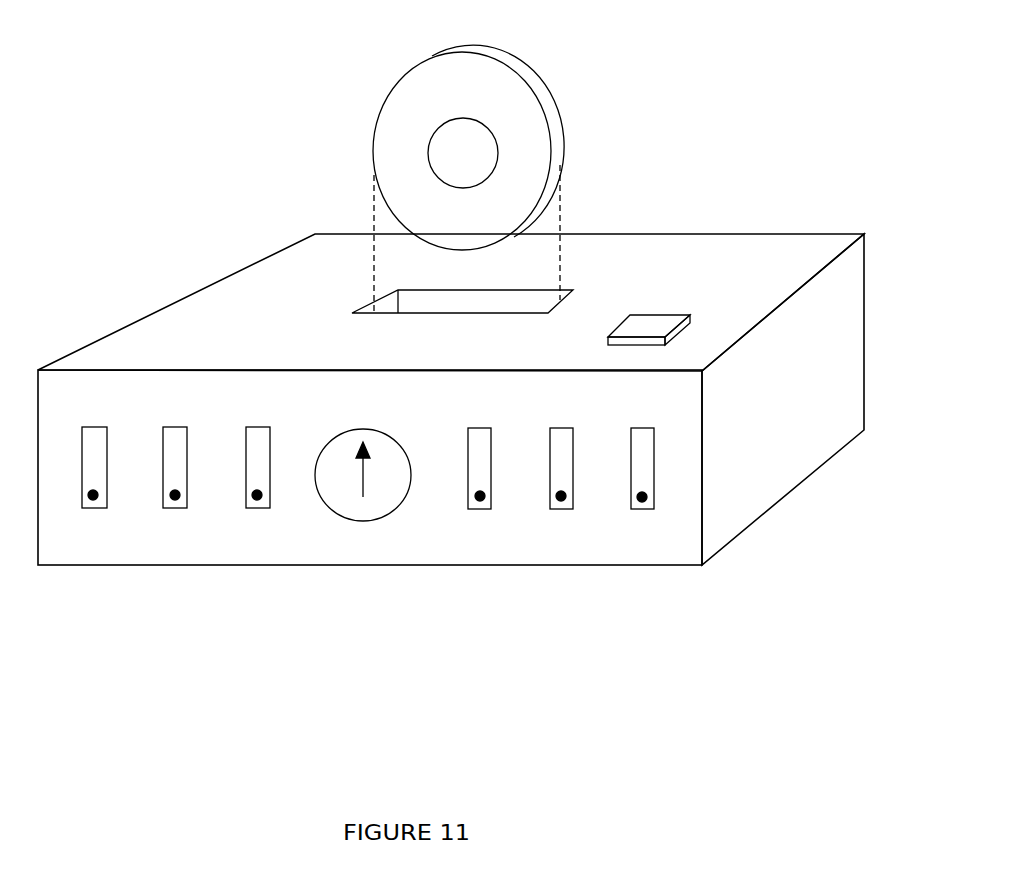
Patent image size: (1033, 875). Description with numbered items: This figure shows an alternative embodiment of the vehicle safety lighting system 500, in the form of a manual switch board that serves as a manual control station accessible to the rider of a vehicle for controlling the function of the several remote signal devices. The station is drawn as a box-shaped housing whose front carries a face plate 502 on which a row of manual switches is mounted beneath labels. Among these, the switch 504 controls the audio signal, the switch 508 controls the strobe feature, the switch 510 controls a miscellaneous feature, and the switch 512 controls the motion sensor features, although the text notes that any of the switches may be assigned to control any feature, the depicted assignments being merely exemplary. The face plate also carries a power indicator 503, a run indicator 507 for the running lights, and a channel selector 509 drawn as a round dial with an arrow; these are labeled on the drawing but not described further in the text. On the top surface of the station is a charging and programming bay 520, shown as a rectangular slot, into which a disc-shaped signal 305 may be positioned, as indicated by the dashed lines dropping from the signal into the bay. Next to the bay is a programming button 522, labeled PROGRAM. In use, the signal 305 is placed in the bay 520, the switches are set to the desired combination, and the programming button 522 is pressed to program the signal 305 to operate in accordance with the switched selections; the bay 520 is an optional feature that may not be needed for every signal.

The vehicle safety lighting system 500 is at (297, 195).
The signal 305 is at (502, 83).
The charging and programming bay 520 is at (525, 303).
The programming button 522 is at (642, 325).
The face plate 502 is at (82, 553).
The power indicator 503 is at (95, 498).
The manual switch 504 is at (177, 498).
The run indicator 507 is at (259, 498).
The channel selector 509 is at (387, 497).
The manual switch 508 is at (482, 498).
The manual switch 510 is at (563, 498).
The manual switch 512 is at (644, 500).